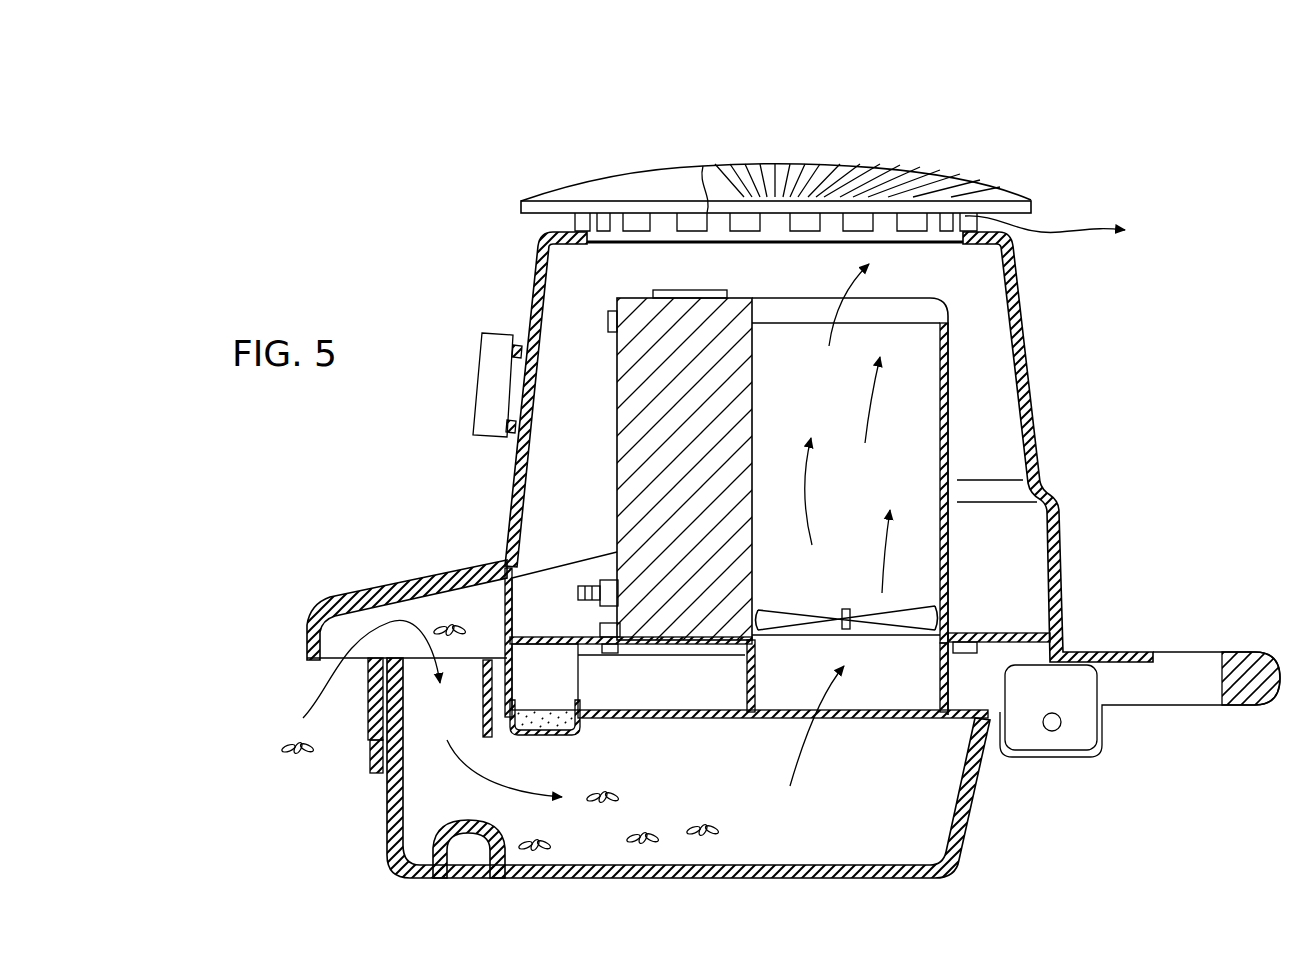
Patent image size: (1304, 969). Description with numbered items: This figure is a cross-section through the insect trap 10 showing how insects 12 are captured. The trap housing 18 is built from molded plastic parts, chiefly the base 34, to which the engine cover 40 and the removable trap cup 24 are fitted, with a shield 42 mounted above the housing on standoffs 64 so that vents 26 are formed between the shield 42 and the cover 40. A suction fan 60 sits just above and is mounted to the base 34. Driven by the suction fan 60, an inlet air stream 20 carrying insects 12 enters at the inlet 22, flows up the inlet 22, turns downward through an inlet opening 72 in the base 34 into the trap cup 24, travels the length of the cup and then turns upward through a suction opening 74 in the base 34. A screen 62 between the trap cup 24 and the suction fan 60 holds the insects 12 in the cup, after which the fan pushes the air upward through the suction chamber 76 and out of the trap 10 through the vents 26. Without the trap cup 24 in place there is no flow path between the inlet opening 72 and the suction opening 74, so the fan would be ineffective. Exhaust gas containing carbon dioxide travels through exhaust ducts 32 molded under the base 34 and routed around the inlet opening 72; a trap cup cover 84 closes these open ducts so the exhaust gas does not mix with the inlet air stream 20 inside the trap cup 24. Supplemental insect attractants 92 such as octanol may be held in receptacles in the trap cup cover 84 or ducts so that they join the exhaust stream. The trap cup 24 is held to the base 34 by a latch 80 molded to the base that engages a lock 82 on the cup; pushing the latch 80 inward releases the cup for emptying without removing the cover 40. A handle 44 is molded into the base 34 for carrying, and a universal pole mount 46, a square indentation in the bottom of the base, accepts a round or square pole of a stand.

The trap 10 is at (1103, 372).
The insects 12 is at (298, 770).
The trap housing 18 is at (1027, 321).
The inlet air stream 20 is at (303, 718).
The inlet 22 is at (332, 647).
The trap cup 24 is at (967, 812).
The vents 26 is at (645, 222).
The exhaust ducts 32 is at (545, 686).
The base 34 is at (986, 665).
The engine cover 40 is at (536, 292).
The shield 42 is at (928, 182).
The handle 44 is at (1250, 683).
The universal pole mount 46 is at (1056, 754).
The suction fan 60 is at (776, 616).
The screen 62 is at (879, 720).
The standoffs 64 is at (781, 215).
The inlet opening 72 is at (428, 700).
The suction opening 74 is at (893, 688).
The suction chamber 76 is at (838, 499).
The latch 80 is at (373, 750).
The lock 82 is at (369, 694).
The trap cup cover 84 is at (672, 720).
The insect attractants 92 is at (545, 730).